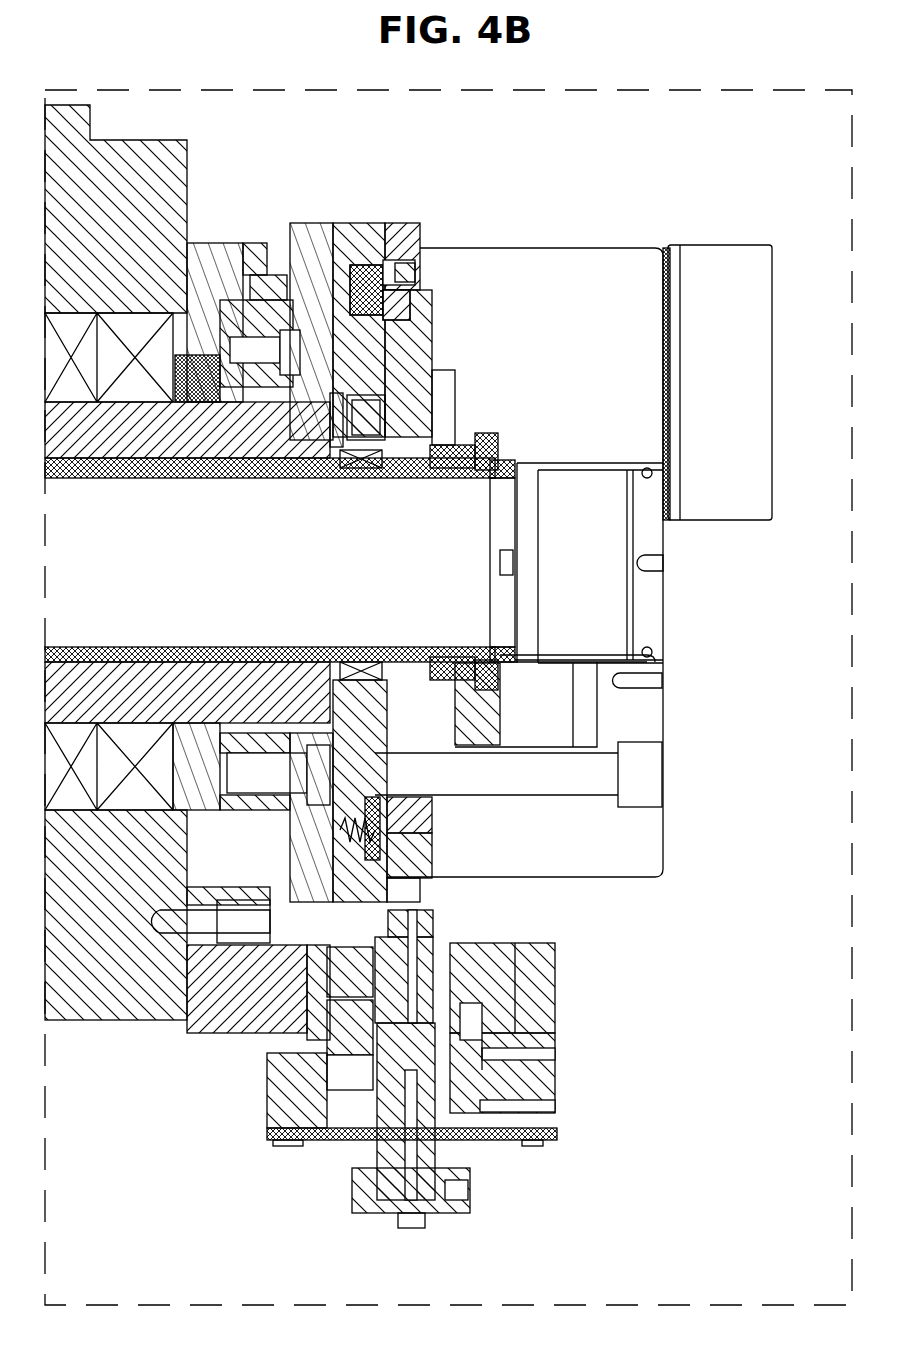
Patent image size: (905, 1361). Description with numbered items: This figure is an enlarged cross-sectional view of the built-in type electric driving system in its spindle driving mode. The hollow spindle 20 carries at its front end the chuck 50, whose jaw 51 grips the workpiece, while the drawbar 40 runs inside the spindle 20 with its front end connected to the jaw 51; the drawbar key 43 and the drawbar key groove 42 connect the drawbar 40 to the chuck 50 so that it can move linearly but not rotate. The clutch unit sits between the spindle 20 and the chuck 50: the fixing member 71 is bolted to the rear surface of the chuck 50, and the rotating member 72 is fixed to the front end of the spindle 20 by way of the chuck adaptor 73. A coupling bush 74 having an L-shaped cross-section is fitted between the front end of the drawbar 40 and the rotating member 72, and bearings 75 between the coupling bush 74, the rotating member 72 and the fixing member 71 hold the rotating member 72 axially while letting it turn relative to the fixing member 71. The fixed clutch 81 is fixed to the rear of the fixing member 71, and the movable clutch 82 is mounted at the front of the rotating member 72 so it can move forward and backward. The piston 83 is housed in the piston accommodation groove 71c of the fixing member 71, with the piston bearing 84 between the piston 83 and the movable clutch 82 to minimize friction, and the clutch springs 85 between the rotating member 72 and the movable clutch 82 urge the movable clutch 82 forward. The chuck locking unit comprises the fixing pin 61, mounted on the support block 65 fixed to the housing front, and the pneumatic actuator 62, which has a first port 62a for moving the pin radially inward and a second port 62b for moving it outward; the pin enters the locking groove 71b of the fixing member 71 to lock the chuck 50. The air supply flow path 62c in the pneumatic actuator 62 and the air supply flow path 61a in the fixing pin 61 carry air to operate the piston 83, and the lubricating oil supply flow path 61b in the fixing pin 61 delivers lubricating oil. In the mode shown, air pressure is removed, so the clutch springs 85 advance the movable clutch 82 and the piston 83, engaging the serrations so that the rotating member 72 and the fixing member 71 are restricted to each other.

The spindle 20 is at (93, 470).
The drawbar 40 is at (133, 470).
The drawbar key groove 42 is at (435, 657).
The drawbar key 43 is at (360, 647).
The chuck 50 is at (571, 256).
The jaw 51 is at (721, 258).
The fixing pin 61 is at (425, 940).
The air supply flow path 61a is at (405, 918).
The lubricating oil supply flow path 61b is at (410, 1195).
The pneumatic actuator 62 is at (510, 968).
The first port 62a is at (540, 1106).
The second port 62b is at (540, 1054).
The air supply flow path 62c is at (292, 1080).
The support block 65 is at (200, 1035).
The fixing member 71 is at (430, 340).
The locking groove 71b is at (415, 862).
The piston accommodation groove 71c is at (415, 812).
The rotating member 72 is at (425, 368).
The chuck adaptor 73 is at (322, 240).
The coupling bush 74 is at (376, 478).
The bearings 75 is at (343, 478).
The fixed clutch 81 is at (400, 250).
The movable clutch 82 is at (360, 250).
The piston 83 is at (420, 285).
The piston bearing 84 is at (412, 310).
The clutch springs 85 is at (372, 832).